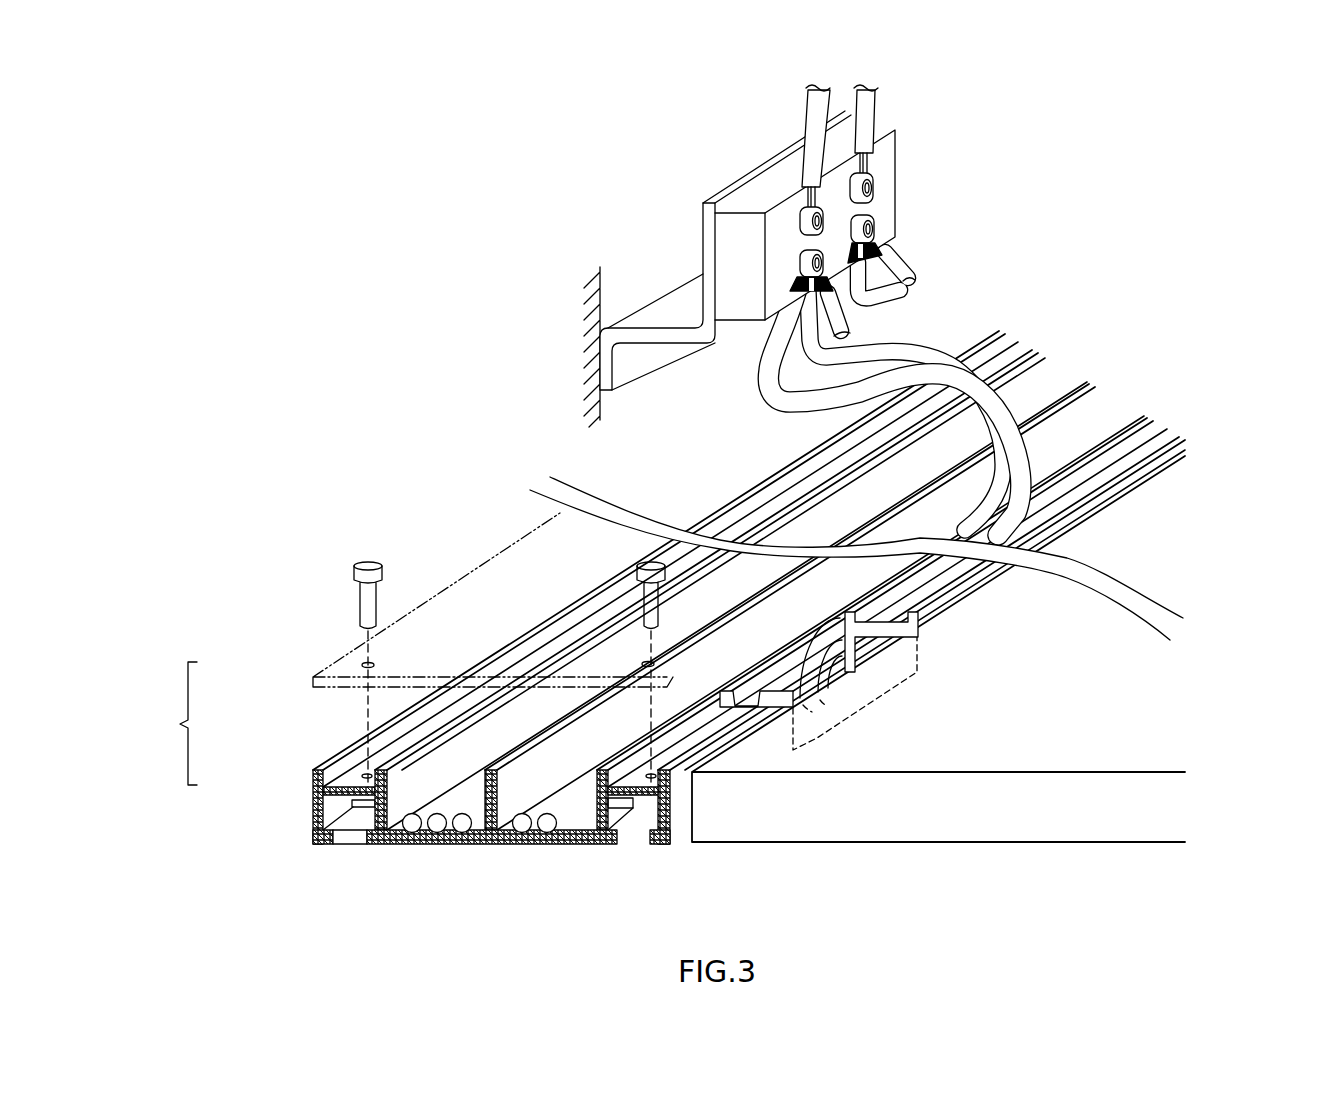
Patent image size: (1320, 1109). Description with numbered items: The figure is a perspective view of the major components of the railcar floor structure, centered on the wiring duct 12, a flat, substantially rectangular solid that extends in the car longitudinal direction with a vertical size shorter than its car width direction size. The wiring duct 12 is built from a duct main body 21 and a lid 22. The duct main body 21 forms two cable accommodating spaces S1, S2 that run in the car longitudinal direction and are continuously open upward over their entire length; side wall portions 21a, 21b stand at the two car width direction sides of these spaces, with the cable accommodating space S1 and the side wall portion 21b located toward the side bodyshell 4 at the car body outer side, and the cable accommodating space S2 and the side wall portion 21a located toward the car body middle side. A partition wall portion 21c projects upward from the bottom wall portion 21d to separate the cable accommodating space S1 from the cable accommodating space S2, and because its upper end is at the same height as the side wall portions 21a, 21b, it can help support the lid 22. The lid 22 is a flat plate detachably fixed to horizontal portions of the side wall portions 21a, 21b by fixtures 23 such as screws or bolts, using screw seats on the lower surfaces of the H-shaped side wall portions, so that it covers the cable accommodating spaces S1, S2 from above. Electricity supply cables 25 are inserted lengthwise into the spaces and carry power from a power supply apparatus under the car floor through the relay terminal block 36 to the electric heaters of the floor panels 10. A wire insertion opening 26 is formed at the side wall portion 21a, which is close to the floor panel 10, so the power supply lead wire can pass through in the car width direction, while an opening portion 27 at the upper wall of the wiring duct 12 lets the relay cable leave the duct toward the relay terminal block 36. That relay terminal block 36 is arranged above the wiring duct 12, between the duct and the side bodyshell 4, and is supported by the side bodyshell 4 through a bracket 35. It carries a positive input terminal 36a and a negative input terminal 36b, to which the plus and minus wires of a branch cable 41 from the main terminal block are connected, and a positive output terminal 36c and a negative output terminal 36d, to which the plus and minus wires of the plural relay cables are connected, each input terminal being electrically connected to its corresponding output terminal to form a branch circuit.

The side bodyshell 4 is at (603, 265).
The floor panel 10 is at (1081, 843).
The wiring duct 12 is at (170, 723).
The duct main body 21 is at (312, 776).
The side wall portion 21a is at (673, 815).
The side wall portion 21b is at (310, 820).
The partition wall portion 21c is at (488, 795).
The bottom wall portion 21d is at (570, 843).
The lid 22 is at (310, 680).
The fixture 23 is at (355, 570).
The electricity supply cable 25 is at (1015, 393).
The wire insertion opening 26 is at (817, 740).
The opening portion 27 is at (1060, 450).
The bracket 35 is at (687, 343).
The relay terminal block 36 is at (898, 203).
The positive input terminal 36a is at (800, 217).
The negative input terminal 36b is at (875, 188).
The positive output terminal 36c is at (800, 267).
The negative output terminal 36d is at (875, 228).
The branch cable 41 is at (802, 114).
The cable accommodating space S1 is at (520, 788).
The cable accommodating space S2 is at (413, 788).